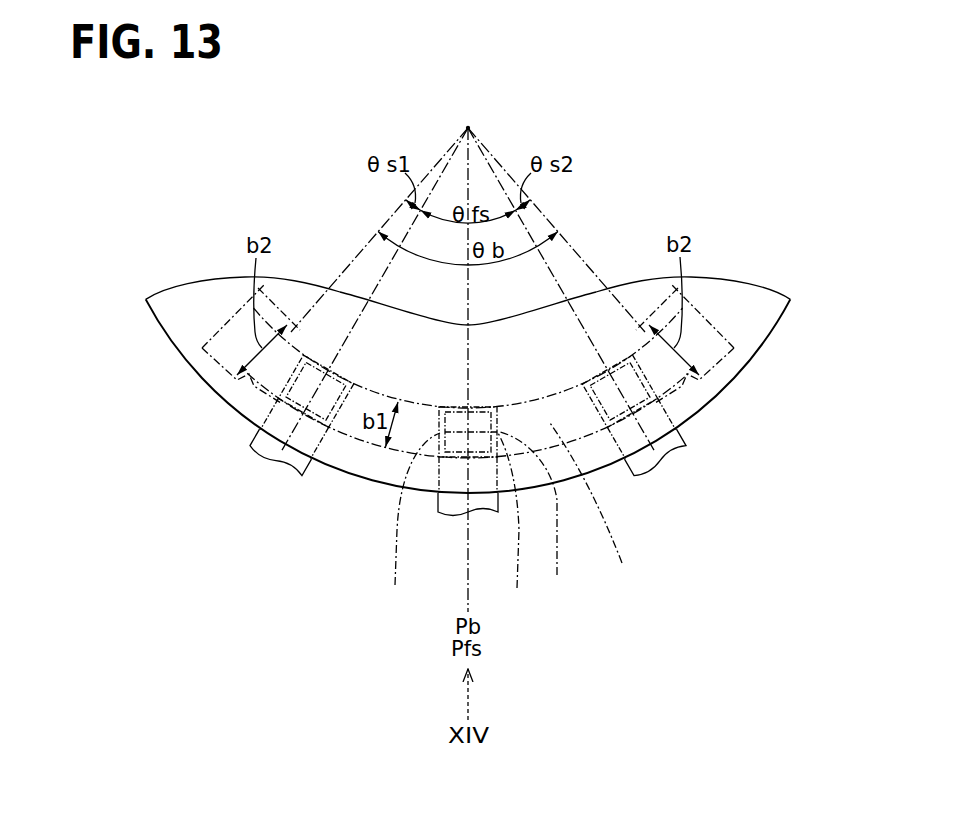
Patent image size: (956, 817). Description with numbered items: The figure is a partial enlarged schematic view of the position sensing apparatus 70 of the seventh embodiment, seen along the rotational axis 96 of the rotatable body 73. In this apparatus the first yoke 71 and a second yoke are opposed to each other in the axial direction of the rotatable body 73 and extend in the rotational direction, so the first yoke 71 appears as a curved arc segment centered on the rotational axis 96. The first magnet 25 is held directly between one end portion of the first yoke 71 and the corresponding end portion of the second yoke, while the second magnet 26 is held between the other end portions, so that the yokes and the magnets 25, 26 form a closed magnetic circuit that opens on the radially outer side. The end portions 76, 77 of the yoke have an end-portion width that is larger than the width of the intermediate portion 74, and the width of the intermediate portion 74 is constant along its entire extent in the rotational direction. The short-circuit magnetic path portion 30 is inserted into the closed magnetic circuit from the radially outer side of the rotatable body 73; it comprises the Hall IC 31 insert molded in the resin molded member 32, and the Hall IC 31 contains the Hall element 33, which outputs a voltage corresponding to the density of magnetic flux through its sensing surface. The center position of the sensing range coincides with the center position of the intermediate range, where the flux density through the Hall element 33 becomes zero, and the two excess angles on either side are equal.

The rotational axis 96 is at (471, 126).
The rotatable body 73 is at (167, 308).
The end portion 76 is at (220, 327).
The first magnet 25 is at (232, 322).
The second magnet 26 is at (708, 308).
The end portion 77 is at (762, 298).
The position sensing apparatus 70 is at (232, 386).
The short-circuit magnetic path portion 30 is at (262, 458).
The first yoke 71 is at (353, 440).
The Hall element 33 is at (412, 522).
The Hall IC 31 is at (516, 524).
The molded member 32 is at (536, 518).
The intermediate portion 74 is at (597, 507).